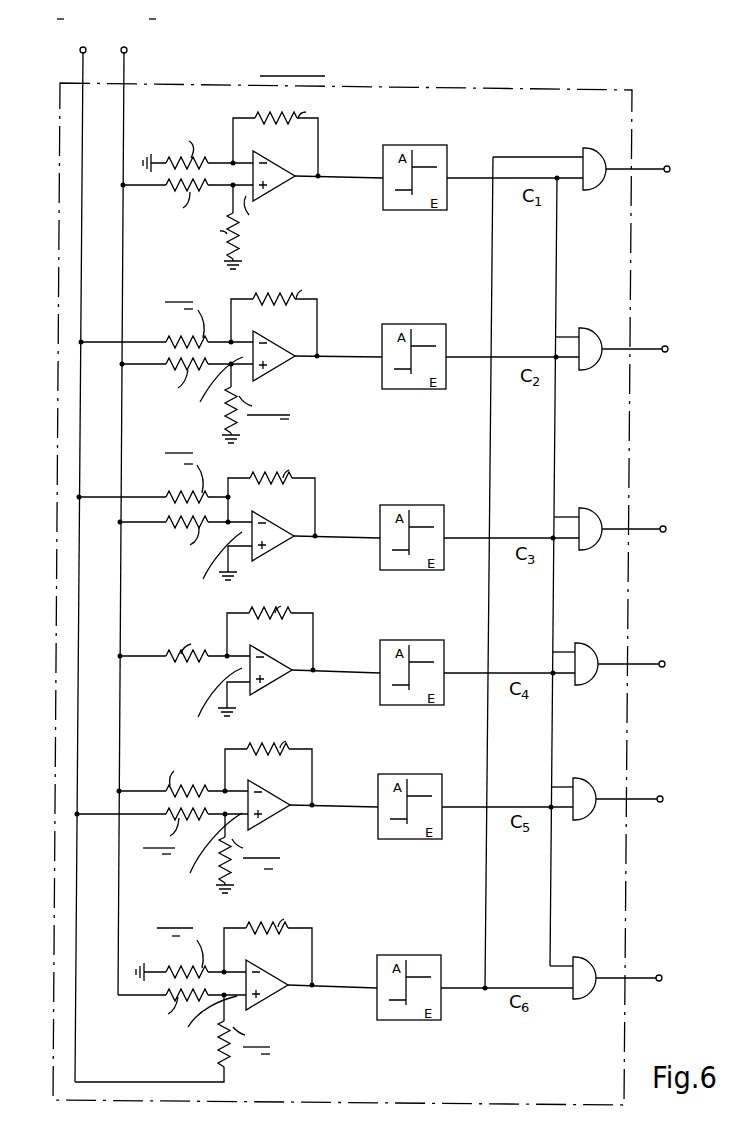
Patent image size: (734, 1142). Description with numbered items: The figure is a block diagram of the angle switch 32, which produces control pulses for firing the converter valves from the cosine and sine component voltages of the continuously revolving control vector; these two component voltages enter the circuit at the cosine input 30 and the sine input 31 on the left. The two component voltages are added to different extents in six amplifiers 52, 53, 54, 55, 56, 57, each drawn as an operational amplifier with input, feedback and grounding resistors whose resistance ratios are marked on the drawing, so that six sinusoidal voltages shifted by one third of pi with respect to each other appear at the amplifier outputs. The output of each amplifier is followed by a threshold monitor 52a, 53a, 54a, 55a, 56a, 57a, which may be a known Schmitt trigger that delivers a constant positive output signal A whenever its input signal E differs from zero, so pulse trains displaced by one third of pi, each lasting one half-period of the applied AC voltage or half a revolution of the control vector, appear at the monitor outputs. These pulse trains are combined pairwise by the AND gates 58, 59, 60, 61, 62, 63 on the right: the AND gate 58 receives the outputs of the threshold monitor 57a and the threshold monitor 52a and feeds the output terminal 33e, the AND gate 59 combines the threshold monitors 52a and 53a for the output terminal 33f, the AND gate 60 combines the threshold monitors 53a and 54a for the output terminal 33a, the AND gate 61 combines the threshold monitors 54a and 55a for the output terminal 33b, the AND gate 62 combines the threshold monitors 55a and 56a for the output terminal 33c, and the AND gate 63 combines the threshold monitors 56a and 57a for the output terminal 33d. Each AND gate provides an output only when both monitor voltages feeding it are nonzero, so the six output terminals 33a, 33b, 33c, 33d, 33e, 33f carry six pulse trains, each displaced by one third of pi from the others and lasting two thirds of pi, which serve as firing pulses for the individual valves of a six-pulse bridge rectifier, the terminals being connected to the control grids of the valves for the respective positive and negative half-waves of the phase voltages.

The cosine input terminal 30 is at (86, 48).
The sine input terminal 31 is at (125, 48).
The angle switch 32 is at (328, 71).
The amplifier 52 is at (275, 190).
The amplifier 53 is at (276, 366).
The amplifier 54 is at (271, 544).
The amplifier 55 is at (271, 680).
The amplifier 56 is at (274, 815).
The amplifier 57 is at (264, 997).
The threshold monitor 52a is at (363, 227).
The threshold monitor 53a is at (362, 406).
The threshold monitor 54a is at (360, 587).
The threshold monitor 55a is at (360, 722).
The threshold monitor 56a is at (378, 826).
The threshold monitor 57a is at (357, 1037).
The AND gate 58 is at (589, 152).
The AND gate 59 is at (596, 334).
The AND gate 60 is at (595, 512).
The AND gate 61 is at (592, 649).
The AND gate 62 is at (589, 782).
The AND gate 63 is at (597, 955).
The output terminal 33a is at (669, 531).
The output terminal 33b is at (668, 666).
The output terminal 33c is at (666, 801).
The output terminal 33d is at (665, 980).
The output terminal 33e is at (673, 171).
The output terminal 33f is at (671, 351).